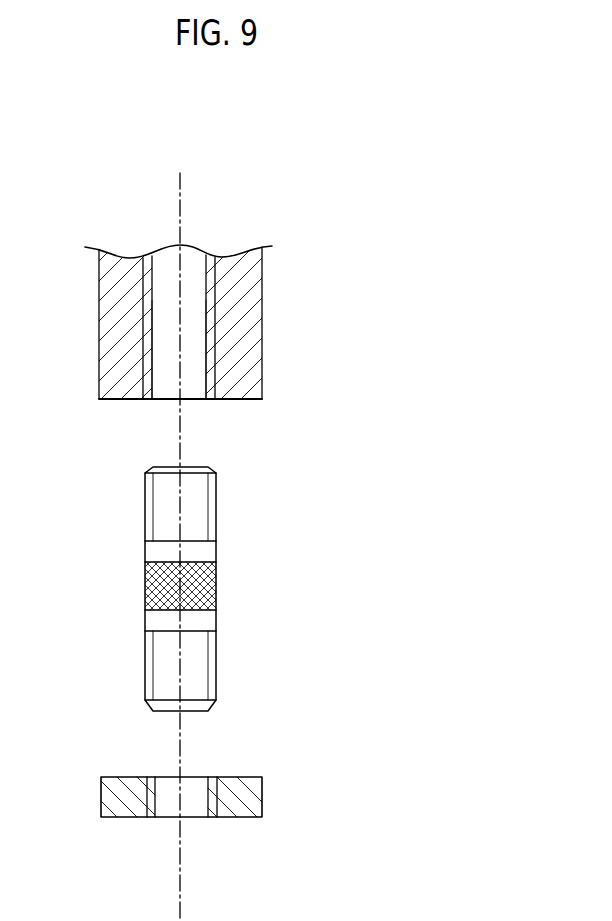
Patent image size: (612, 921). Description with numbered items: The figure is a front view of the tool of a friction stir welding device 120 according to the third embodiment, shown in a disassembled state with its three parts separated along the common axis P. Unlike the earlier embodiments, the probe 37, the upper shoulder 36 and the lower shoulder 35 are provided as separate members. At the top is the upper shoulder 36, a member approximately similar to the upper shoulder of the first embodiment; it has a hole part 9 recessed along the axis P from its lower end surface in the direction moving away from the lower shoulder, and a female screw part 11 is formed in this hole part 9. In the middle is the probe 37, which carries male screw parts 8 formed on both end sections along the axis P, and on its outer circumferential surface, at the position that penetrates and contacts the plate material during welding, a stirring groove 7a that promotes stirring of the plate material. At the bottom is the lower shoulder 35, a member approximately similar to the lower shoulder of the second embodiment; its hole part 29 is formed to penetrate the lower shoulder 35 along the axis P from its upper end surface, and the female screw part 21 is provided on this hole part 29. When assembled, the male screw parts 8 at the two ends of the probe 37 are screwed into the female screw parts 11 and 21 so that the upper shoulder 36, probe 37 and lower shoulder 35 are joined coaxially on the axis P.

The axis P is at (181, 198).
The friction stir welding device 120 is at (404, 301).
The upper shoulder 36 is at (242, 303).
The female screw part 11 is at (147, 293).
The hole part 9 is at (208, 347).
The male screw parts 8 is at (212, 514).
The probe 37 is at (206, 553).
The stirring groove 7a is at (205, 590).
The lower shoulder 35 is at (253, 792).
The hole part 29 is at (147, 803).
The female screw part 21 is at (210, 812).